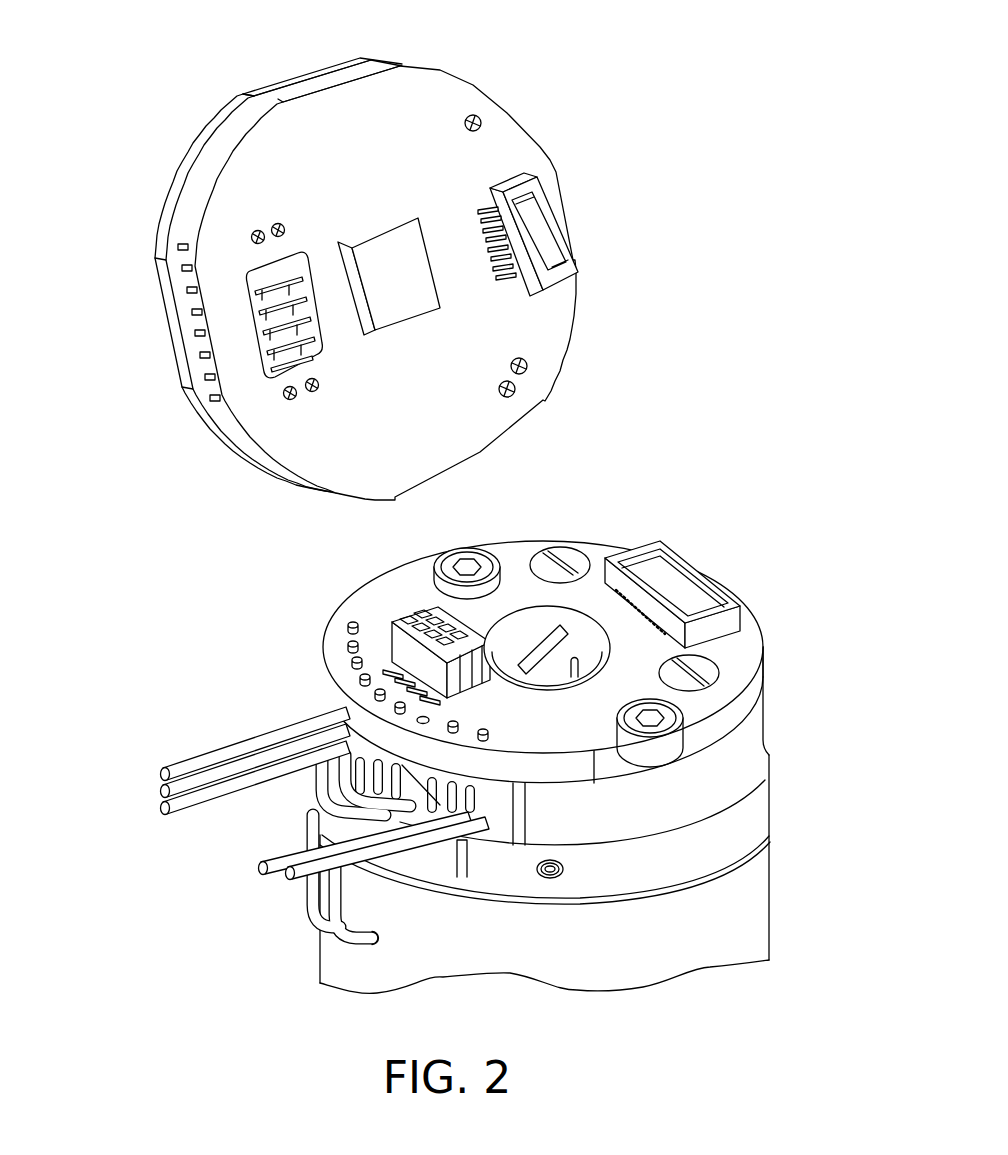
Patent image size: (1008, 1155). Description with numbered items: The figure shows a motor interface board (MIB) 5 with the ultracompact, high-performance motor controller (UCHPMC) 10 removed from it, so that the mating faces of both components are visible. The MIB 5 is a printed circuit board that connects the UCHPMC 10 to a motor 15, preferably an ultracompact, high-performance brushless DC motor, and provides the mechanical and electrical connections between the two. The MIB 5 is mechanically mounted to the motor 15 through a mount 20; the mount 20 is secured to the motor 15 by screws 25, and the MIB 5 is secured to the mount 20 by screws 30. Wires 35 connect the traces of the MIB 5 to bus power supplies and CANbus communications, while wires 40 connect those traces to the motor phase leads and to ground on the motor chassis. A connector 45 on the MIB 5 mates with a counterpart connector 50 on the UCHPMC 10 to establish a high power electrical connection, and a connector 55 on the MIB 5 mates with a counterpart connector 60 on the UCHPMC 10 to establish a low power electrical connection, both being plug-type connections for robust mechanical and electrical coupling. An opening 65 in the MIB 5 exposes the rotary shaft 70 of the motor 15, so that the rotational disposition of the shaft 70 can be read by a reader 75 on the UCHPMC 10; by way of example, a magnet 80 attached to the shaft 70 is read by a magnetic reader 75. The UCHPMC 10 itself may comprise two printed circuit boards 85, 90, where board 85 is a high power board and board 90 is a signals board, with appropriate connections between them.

The motor interface board 5 is at (742, 668).
The ultracompact, high-performance motor controller 10 is at (158, 168).
The motor 15 is at (738, 903).
The mount 20 is at (743, 768).
The screws 25 is at (447, 549).
The screws 30 is at (575, 561).
The wires 35 is at (203, 743).
The wires 40 is at (310, 930).
The connector 45 is at (402, 647).
The counterpart connector 50 is at (257, 270).
The connector 55 is at (730, 618).
The counterpart connector 60 is at (528, 288).
The opening 65 is at (584, 678).
The rotary shaft 70 is at (528, 637).
The reader 75 is at (366, 253).
The magnet 80 is at (543, 633).
The printed circuit board 85 is at (294, 73).
The printed circuit board 90 is at (352, 81).